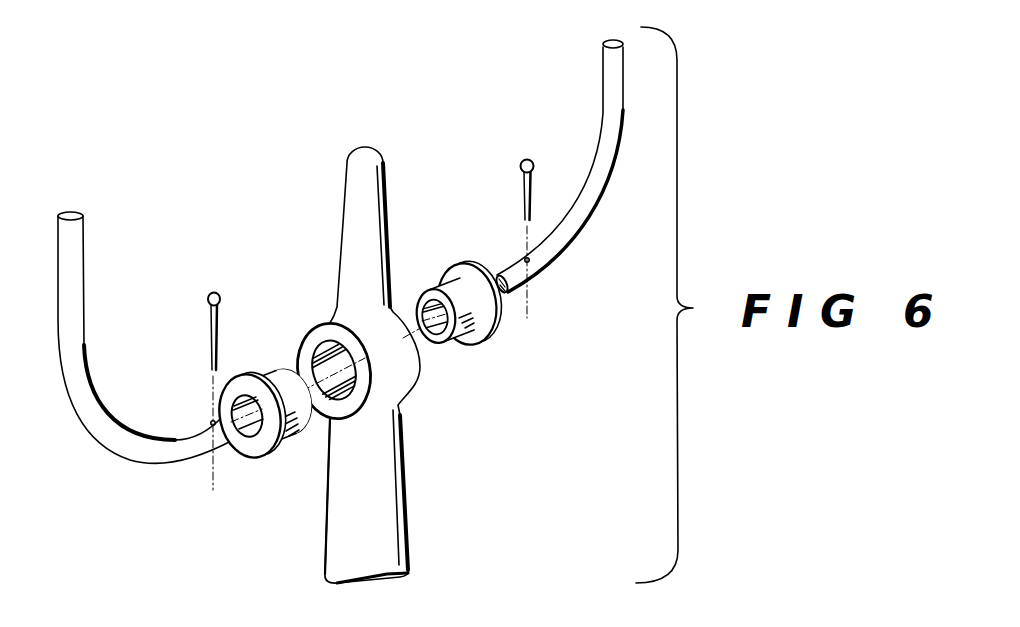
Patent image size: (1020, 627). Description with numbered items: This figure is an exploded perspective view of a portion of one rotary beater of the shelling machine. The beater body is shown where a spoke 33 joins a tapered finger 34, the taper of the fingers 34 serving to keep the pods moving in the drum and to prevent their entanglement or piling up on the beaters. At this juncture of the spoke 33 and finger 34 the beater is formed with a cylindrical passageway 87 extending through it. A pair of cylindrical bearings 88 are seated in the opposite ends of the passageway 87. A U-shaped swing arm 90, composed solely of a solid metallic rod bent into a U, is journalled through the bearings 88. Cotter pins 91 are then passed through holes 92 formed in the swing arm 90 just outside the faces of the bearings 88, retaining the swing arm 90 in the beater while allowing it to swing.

The spoke 33 is at (335, 503).
The tapered finger 34 is at (375, 226).
The cylindrical passageway 87 is at (316, 335).
The cylindrical bearing 88 is at (278, 373).
The U-shaped swing arm 90 is at (80, 309).
The cotter pin 91 is at (221, 297).
The hole 92 is at (211, 421).